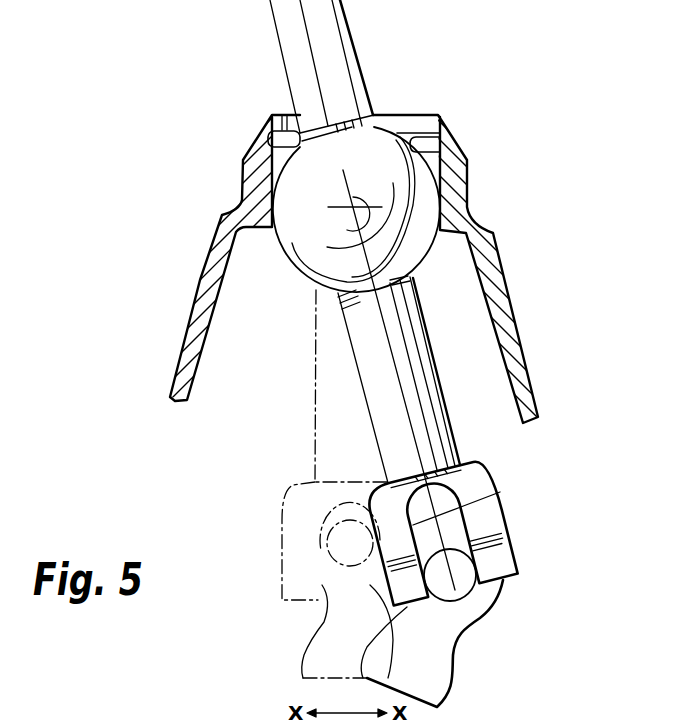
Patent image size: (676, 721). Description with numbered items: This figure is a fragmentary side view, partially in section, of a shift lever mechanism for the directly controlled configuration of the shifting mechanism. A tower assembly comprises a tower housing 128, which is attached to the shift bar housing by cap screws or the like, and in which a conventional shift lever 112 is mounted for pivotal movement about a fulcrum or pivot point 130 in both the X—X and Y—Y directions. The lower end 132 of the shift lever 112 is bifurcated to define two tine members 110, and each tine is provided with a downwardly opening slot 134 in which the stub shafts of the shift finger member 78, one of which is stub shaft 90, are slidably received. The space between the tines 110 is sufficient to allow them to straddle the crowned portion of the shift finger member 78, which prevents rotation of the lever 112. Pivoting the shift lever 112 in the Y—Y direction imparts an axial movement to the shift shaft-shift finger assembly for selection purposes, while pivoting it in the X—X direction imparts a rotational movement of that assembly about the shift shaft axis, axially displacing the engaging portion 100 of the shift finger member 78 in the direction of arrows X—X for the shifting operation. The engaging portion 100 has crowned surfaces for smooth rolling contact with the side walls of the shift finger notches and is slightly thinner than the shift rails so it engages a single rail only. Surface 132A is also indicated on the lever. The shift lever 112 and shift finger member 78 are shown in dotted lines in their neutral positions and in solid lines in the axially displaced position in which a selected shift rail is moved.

The shift lever 112 is at (377, 68).
The fulcrum or pivot point 130 is at (362, 200).
The tower housing 128 is at (493, 277).
The lower end of the shift lever 132 is at (437, 468).
The downwardly opening slot 134 is at (452, 511).
The tine members 110 is at (488, 513).
The flats 132A is at (492, 557).
The stub shaft 90 is at (462, 585).
The shift finger member 78 is at (513, 621).
The engaging portion 100 is at (438, 673).